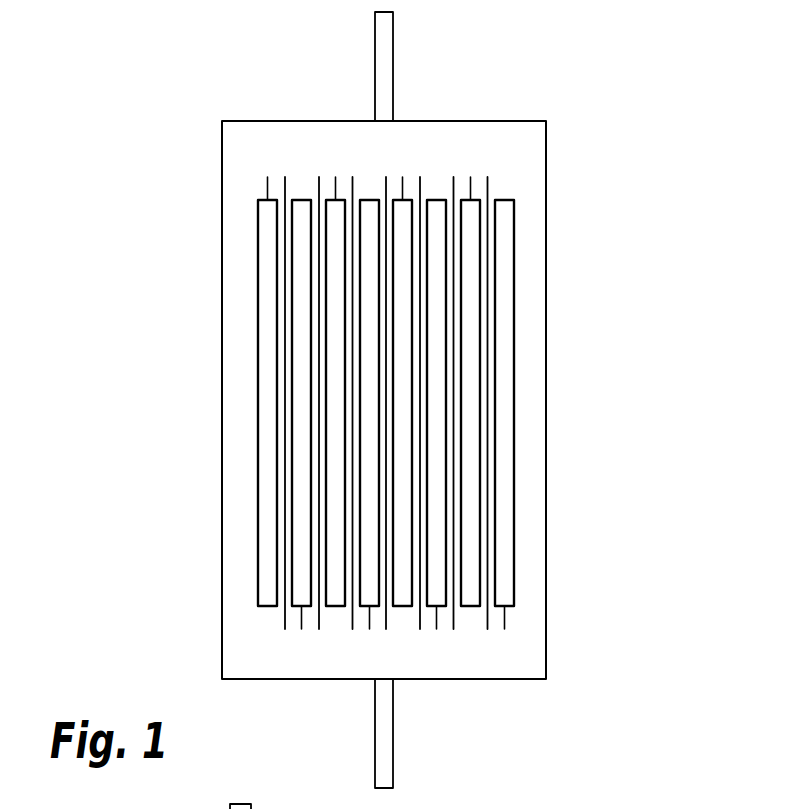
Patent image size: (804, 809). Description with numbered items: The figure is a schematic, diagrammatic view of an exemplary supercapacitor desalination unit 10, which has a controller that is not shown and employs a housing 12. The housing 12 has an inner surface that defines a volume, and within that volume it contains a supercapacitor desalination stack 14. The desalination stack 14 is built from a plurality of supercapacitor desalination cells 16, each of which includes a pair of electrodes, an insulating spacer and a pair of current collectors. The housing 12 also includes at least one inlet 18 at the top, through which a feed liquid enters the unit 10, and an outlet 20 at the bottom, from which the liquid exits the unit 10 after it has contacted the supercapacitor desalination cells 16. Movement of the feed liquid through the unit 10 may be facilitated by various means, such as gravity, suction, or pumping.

The supercapacitor desalination unit 10 is at (519, 85).
The housing 12 is at (546, 252).
The supercapacitor desalination stack 14 is at (514, 350).
The supercapacitor desalination cells 16 is at (481, 551).
The inlet 18 is at (393, 31).
The outlet 20 is at (393, 722).